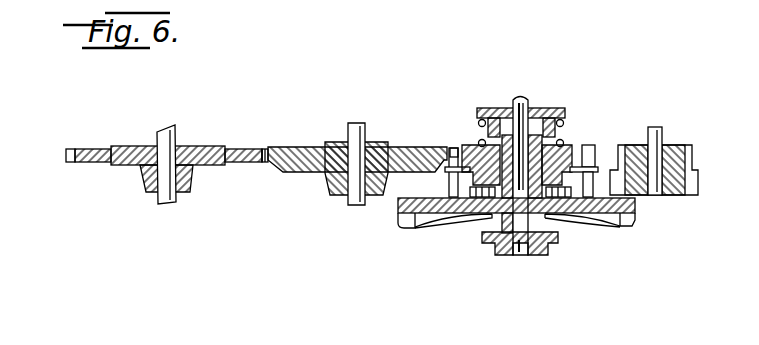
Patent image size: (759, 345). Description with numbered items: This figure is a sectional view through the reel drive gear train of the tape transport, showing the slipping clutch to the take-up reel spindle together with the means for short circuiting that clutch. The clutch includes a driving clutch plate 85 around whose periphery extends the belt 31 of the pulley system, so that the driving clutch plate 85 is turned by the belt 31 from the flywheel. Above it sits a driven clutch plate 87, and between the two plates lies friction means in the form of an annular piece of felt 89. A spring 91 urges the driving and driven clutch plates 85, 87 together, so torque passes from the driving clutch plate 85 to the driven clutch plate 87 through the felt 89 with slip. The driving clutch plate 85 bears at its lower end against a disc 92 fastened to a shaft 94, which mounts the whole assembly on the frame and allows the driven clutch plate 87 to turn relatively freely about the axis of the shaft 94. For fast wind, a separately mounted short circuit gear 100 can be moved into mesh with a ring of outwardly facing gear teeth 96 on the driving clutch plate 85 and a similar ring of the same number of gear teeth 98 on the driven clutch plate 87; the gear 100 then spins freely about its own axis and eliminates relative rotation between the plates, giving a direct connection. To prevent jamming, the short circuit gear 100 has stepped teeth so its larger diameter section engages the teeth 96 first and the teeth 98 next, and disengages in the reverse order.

The belt 31 is at (414, 228).
The driving clutch plate 85 is at (633, 224).
The driven clutch plate 87 is at (568, 143).
The annular piece of felt 89 is at (612, 136).
The spring 91 is at (575, 223).
The disc 92 is at (535, 258).
The shaft 94 is at (518, 257).
The gear teeth 96 is at (598, 225).
The gear teeth 98 is at (608, 148).
The short circuit gear 100 is at (668, 145).